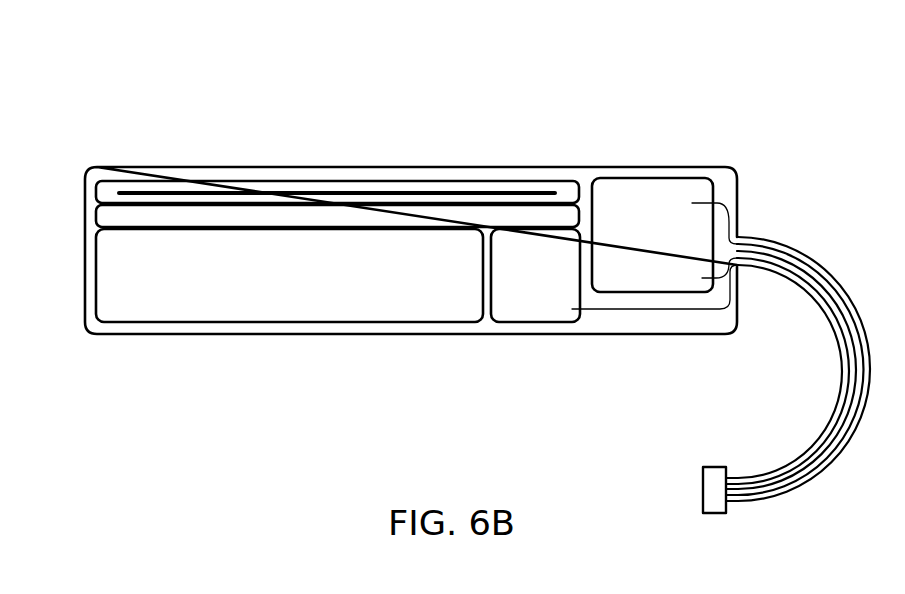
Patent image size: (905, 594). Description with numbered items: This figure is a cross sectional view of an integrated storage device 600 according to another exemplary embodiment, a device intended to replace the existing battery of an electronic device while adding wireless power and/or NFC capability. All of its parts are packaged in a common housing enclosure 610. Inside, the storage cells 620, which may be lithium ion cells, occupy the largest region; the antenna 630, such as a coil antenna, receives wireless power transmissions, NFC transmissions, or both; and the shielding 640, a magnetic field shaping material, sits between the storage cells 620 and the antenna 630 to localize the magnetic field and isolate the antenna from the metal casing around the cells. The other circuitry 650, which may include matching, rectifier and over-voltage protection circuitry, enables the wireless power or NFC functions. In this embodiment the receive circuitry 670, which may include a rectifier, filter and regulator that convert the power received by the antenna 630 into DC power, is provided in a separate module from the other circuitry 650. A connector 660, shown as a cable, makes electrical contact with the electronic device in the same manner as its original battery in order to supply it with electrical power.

The integrated storage device 600 is at (451, 275).
The common housing enclosure 610 is at (411, 300).
The storage cells 620 is at (261, 314).
The antenna 630 is at (463, 194).
The shielding 640 is at (337, 168).
The other circuitry 650 is at (559, 313).
The connector 660 is at (712, 484).
The receive circuitry 670 is at (672, 245).